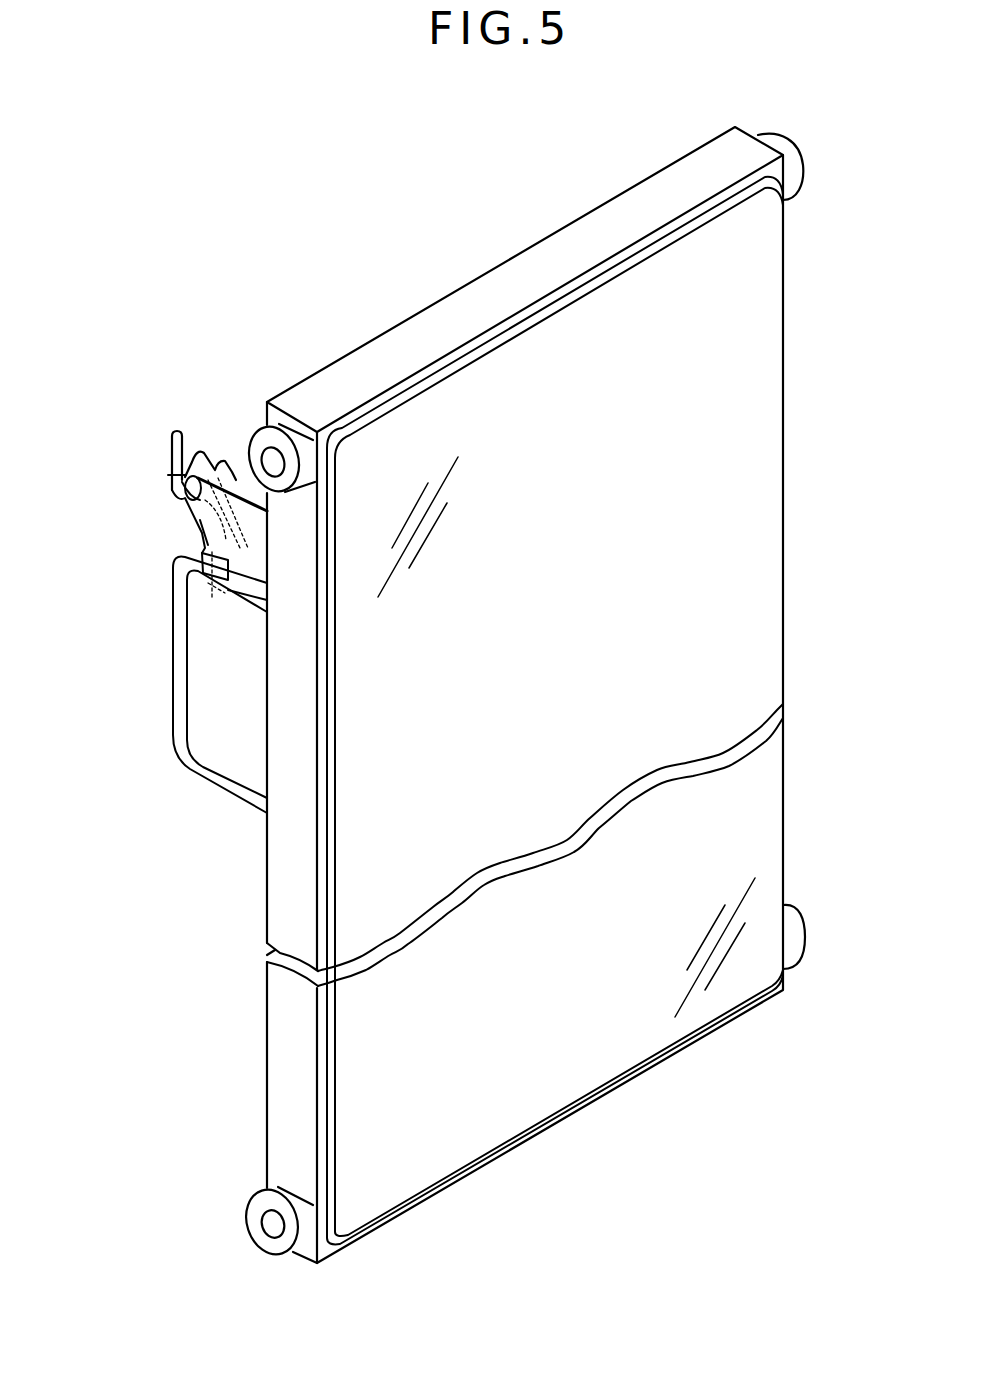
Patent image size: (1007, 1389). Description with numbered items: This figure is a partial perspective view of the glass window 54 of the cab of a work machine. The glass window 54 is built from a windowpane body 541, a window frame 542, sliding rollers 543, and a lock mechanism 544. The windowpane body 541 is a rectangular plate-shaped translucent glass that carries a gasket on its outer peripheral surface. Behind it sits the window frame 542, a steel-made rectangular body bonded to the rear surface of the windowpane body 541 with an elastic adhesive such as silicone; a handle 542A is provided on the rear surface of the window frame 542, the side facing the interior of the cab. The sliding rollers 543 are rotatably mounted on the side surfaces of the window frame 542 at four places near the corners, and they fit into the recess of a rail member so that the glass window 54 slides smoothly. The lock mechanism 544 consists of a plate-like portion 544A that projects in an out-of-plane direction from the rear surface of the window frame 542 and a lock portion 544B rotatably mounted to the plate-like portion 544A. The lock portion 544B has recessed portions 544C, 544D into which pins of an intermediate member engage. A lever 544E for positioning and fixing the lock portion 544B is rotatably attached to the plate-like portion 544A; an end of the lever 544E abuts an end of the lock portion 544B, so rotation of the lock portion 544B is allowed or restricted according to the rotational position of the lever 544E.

The glass window 54 is at (400, 203).
The windowpane body 541 is at (585, 360).
The window frame 542 is at (378, 362).
The handle 542A is at (180, 667).
The sliding rollers 543 is at (790, 163).
The lock mechanism 544 is at (193, 508).
The plate-like portion 544A is at (176, 466).
The lock portion 544B is at (193, 445).
The recessed portion 544C is at (216, 444).
The recessed portion 544D is at (180, 473).
The lever 544E is at (200, 557).